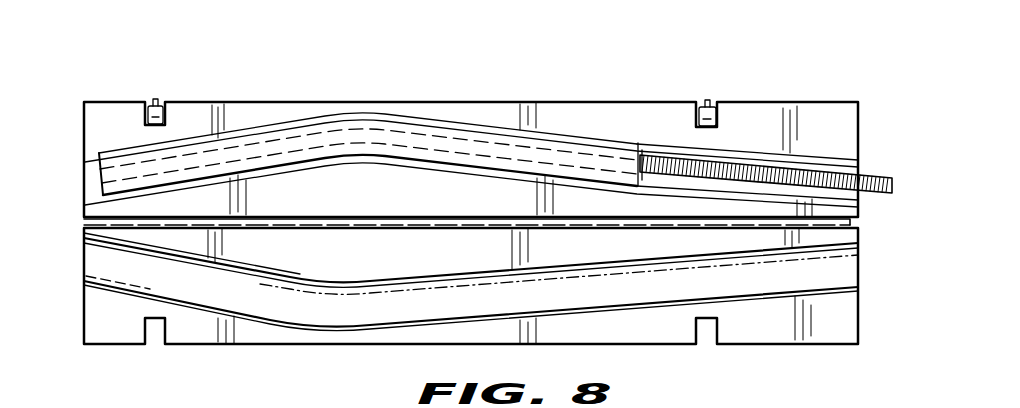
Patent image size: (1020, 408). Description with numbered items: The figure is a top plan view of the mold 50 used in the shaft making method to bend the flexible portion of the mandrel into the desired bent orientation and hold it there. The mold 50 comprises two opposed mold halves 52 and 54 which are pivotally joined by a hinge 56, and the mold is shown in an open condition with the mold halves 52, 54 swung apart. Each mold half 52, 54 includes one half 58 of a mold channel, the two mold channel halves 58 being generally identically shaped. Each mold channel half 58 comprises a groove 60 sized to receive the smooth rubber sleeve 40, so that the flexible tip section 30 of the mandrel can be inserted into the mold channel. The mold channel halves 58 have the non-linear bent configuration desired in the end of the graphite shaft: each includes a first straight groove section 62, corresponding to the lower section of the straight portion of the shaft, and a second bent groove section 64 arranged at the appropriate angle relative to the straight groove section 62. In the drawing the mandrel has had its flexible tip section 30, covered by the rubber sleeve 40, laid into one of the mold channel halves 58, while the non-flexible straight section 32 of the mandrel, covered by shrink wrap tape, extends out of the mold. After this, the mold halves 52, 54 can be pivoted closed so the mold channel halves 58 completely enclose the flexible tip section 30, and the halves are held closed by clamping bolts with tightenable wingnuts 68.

The flexible tip section 30 is at (374, 110).
The non-flexible straight section 32 is at (727, 158).
The rubber sleeve 40 is at (290, 128).
The mold 50 is at (478, 102).
The mold half 52 is at (601, 112).
The mold half 54 is at (105, 317).
The hinge 56 is at (848, 224).
The mold channel half 58 is at (828, 153).
The groove 60 is at (342, 311).
The first straight groove section 62 is at (733, 284).
The second bent groove section 64 is at (243, 290).
The tightenable wingnut 68 is at (153, 99).